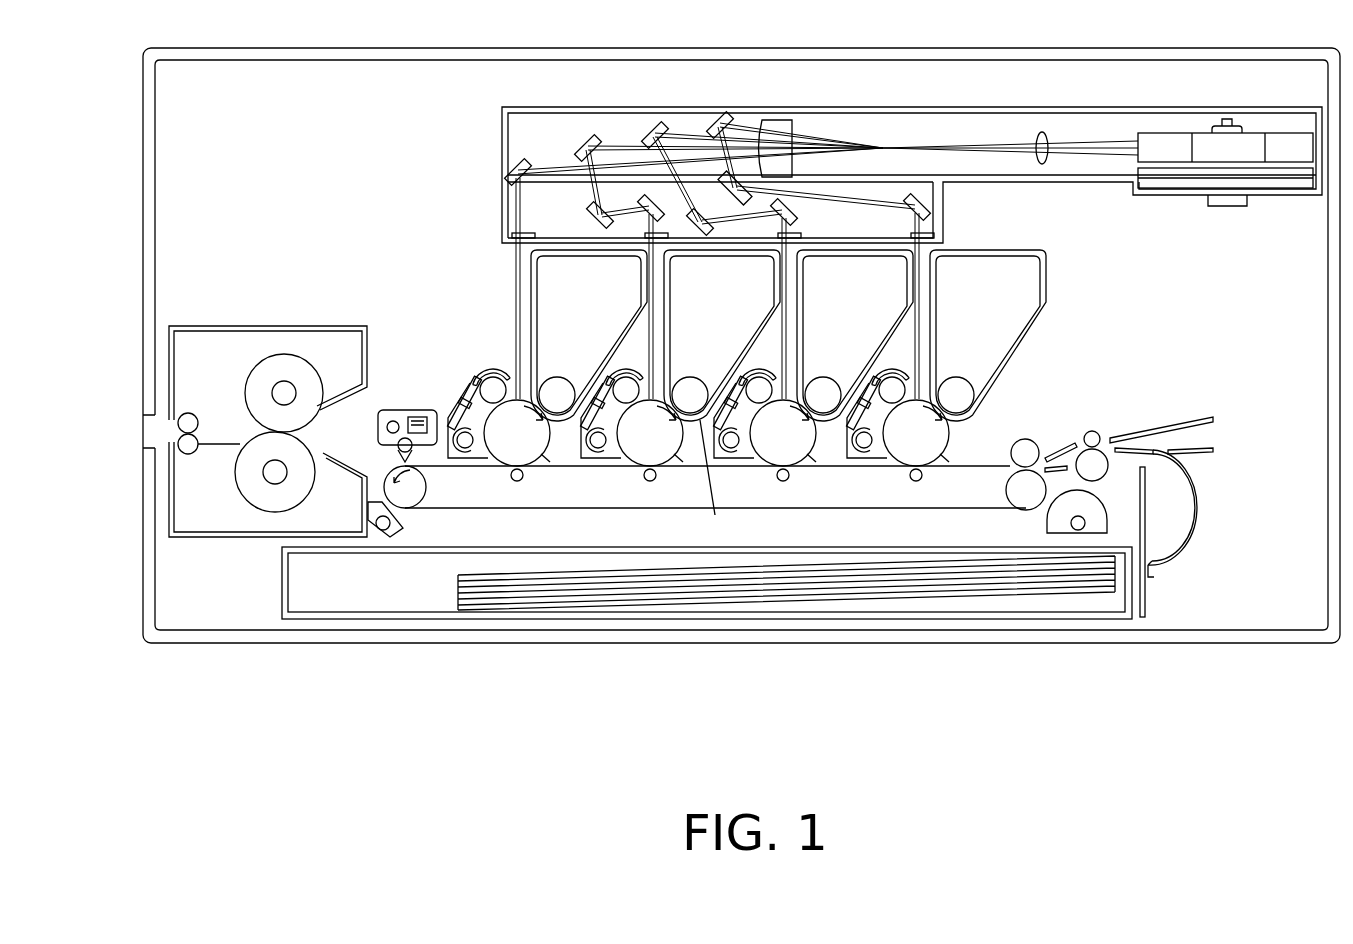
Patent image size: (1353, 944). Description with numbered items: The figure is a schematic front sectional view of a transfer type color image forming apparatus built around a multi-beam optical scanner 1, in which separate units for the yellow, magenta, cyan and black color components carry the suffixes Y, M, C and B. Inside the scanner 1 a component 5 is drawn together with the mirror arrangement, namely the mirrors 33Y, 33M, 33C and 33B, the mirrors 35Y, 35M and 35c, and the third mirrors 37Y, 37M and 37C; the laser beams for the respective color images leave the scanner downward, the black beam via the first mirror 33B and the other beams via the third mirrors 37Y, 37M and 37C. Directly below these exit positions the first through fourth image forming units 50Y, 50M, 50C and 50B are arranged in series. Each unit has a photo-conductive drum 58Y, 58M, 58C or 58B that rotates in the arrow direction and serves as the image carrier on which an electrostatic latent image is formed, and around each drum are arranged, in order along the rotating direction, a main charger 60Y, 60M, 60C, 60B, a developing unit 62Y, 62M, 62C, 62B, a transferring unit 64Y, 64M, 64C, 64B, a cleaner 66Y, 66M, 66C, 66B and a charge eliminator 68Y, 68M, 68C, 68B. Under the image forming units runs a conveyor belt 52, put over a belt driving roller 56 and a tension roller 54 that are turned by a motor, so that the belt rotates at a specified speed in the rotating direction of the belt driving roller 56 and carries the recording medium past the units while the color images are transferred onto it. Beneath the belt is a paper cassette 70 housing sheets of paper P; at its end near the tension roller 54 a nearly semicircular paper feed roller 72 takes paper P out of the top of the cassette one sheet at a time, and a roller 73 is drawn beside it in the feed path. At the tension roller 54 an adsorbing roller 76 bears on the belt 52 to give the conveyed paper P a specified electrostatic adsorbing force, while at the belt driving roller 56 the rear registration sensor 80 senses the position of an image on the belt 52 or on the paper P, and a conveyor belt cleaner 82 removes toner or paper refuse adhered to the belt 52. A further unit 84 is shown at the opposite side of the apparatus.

The multi-beam optical scanner 1 is at (1103, 195).
The laser unit 5 is at (1196, 128).
The first mirror 33B is at (508, 165).
The mirror for cyan 33C is at (585, 138).
The mirror for magenta 33M is at (662, 125).
The mirror for yellow 33Y is at (735, 122).
The second mirror for cyan 35c is at (596, 218).
The second mirror for magenta 35M is at (703, 232).
The second mirror for yellow 35Y is at (720, 178).
The third mirror 37C is at (648, 200).
The third mirror 37M is at (812, 224).
The third mirror 37Y is at (932, 212).
The fourth image forming unit 50B is at (565, 282).
The third image forming unit 50C is at (722, 335).
The second image forming unit 50M is at (855, 335).
The first image forming unit 50Y is at (988, 335).
The conveyor belt 52 is at (1003, 463).
The tension roller 54 is at (1022, 500).
The belt driving roller 56 is at (415, 500).
The photo-conductive drum 58B is at (537, 450).
The photo-conductive drum 58C is at (679, 474).
The photo-conductive drum 58M is at (827, 476).
The photo-conductive drum 58Y is at (966, 445).
The main charger 60B is at (500, 405).
The main charger 60C is at (793, 524).
The main charger 60M is at (783, 433).
The main charger 60Y is at (916, 433).
The developing unit 62B is at (493, 376).
The developing unit 62C is at (720, 479).
The developing unit 62M is at (832, 366).
The developing unit 62Y is at (1000, 381).
The transferring unit 64B is at (516, 482).
The transferring unit 64C is at (666, 506).
The transferring unit 64M is at (798, 505).
The transferring unit 64Y is at (941, 486).
The cleaner 66B is at (468, 448).
The charger cyan 66C is at (591, 443).
The cleaner 66M is at (741, 441).
The cleaner 66Y is at (881, 464).
The charge eliminator 68B is at (470, 385).
The charge eliminator 68C is at (553, 383).
The charge eliminator 68M is at (696, 371).
The charge eliminator 68Y is at (930, 368).
The paper cassette 70 is at (1087, 602).
The paper feed roller 72 is at (1107, 527).
The pressure roller 73 is at (1100, 432).
The adsorbing roller 76 is at (1045, 440).
The registration sensor 80 is at (392, 410).
The conveyor belt cleaner 82 is at (382, 545).
The duplex unit 84 is at (210, 515).
The paper P is at (990, 600).